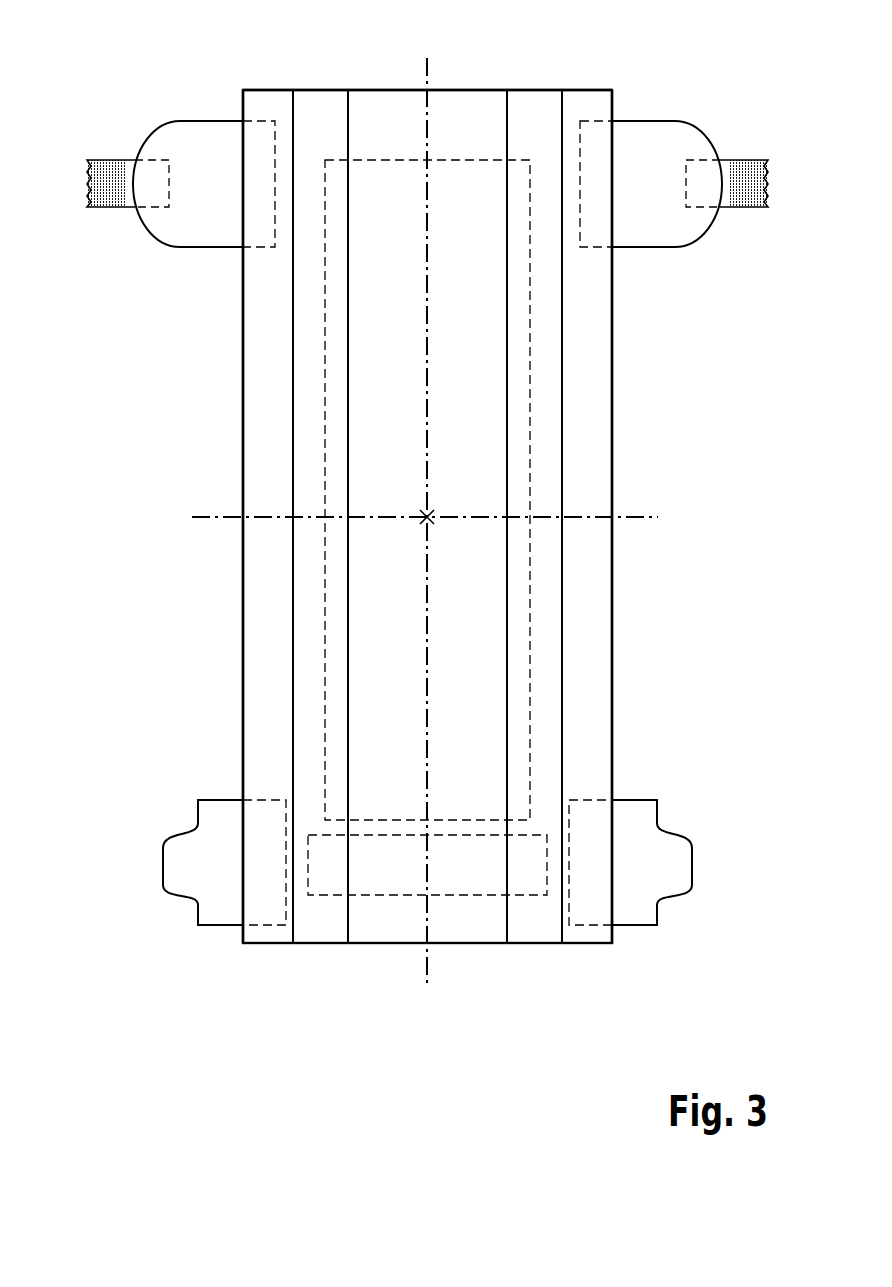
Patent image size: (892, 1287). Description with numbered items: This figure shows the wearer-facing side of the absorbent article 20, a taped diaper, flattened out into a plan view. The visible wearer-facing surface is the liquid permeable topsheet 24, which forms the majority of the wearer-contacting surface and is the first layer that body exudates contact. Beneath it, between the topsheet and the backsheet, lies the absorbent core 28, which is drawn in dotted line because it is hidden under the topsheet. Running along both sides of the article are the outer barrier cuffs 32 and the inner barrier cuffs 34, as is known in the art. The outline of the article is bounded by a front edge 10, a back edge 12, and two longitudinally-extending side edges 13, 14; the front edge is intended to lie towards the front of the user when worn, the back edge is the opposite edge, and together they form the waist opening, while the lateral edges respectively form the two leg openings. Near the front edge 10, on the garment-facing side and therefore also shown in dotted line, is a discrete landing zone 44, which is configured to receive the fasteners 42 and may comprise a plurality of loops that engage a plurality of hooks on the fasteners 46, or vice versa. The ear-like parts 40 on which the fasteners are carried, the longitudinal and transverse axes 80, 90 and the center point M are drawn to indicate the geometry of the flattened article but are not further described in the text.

The front edge 10 is at (572, 943).
The back edge 12 is at (580, 89).
The longitudinally-extending side edge 13 is at (612, 647).
The longitudinally-extending side edge 14 is at (243, 625).
The absorbent article 20 is at (694, 729).
The topsheet 24 is at (378, 107).
The absorbent core 28 is at (530, 390).
The outer barrier cuffs 32 is at (588, 458).
The inner barrier cuffs 34 is at (303, 715).
The front ear 40 is at (191, 220).
The fasteners 42 is at (130, 195).
The landing zone 44 is at (332, 885).
The fasteners 46 is at (187, 872).
The longitudinal axis 80 is at (423, 963).
The transverse axis 90 is at (656, 519).
The center point M is at (441, 534).